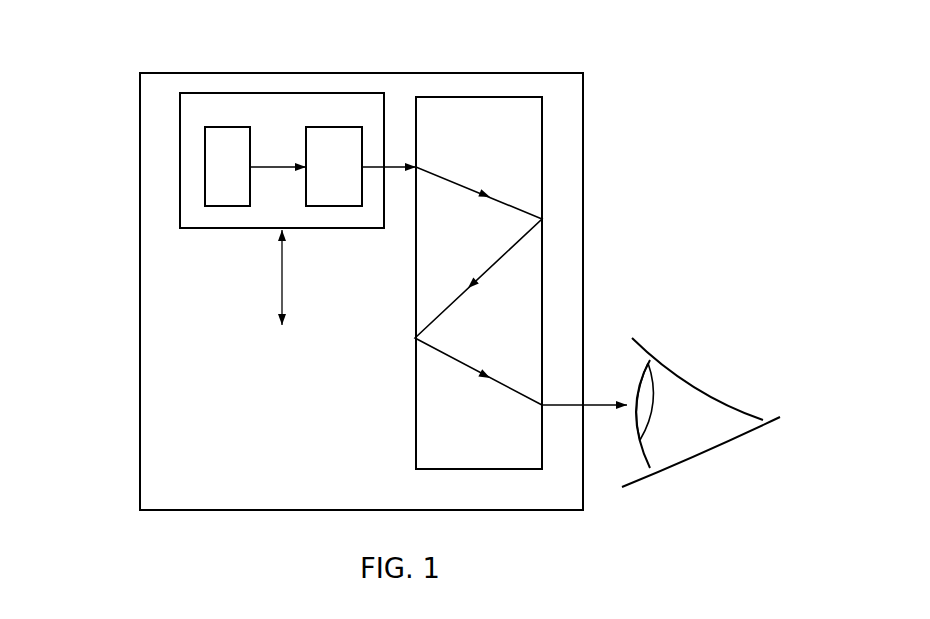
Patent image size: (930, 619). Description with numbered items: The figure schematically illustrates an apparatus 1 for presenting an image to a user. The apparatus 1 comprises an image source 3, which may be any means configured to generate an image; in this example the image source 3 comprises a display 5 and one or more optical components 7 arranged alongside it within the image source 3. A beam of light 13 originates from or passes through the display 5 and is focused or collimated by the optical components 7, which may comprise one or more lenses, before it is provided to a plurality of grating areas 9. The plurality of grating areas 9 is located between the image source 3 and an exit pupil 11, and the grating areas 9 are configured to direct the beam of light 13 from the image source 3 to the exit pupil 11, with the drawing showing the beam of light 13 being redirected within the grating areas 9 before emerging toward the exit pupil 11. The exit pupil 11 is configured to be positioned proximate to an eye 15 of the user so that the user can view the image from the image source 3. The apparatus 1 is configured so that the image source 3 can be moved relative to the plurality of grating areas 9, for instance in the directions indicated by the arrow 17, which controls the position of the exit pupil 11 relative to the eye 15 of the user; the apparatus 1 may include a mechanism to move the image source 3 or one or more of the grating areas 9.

The apparatus 1 is at (588, 112).
The image source 3 is at (233, 92).
The display 5 is at (203, 167).
The optical components 7 is at (296, 207).
The plurality of grating areas 9 is at (545, 194).
The exit pupil 11 is at (603, 397).
The beam of light 13 is at (397, 160).
The eye 15 is at (697, 382).
The arrow 17 is at (282, 287).